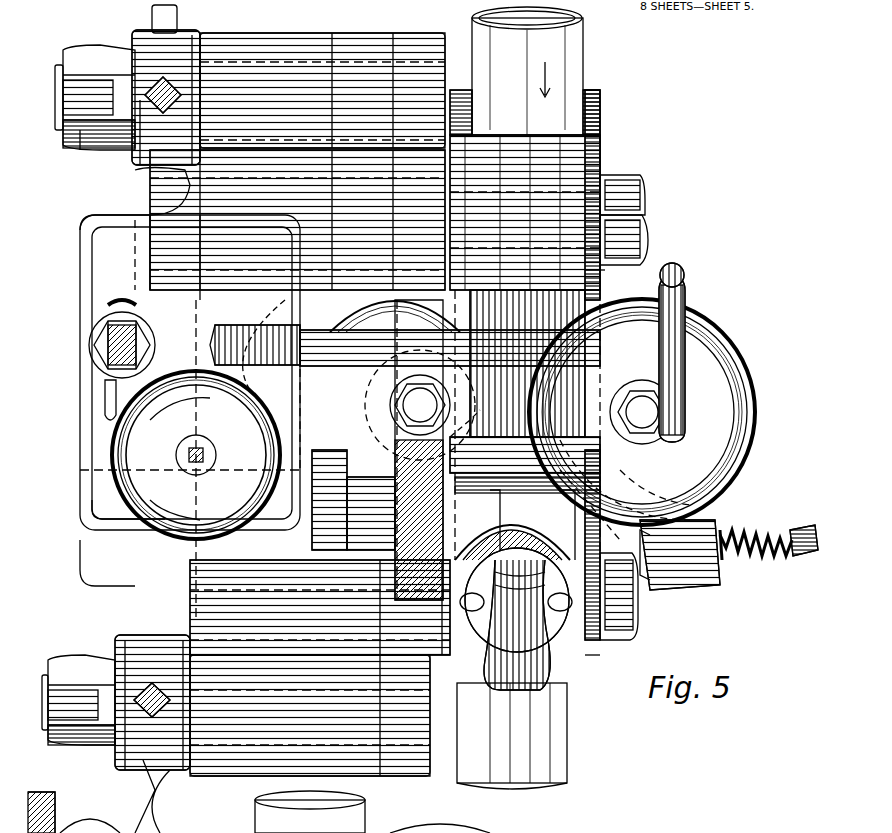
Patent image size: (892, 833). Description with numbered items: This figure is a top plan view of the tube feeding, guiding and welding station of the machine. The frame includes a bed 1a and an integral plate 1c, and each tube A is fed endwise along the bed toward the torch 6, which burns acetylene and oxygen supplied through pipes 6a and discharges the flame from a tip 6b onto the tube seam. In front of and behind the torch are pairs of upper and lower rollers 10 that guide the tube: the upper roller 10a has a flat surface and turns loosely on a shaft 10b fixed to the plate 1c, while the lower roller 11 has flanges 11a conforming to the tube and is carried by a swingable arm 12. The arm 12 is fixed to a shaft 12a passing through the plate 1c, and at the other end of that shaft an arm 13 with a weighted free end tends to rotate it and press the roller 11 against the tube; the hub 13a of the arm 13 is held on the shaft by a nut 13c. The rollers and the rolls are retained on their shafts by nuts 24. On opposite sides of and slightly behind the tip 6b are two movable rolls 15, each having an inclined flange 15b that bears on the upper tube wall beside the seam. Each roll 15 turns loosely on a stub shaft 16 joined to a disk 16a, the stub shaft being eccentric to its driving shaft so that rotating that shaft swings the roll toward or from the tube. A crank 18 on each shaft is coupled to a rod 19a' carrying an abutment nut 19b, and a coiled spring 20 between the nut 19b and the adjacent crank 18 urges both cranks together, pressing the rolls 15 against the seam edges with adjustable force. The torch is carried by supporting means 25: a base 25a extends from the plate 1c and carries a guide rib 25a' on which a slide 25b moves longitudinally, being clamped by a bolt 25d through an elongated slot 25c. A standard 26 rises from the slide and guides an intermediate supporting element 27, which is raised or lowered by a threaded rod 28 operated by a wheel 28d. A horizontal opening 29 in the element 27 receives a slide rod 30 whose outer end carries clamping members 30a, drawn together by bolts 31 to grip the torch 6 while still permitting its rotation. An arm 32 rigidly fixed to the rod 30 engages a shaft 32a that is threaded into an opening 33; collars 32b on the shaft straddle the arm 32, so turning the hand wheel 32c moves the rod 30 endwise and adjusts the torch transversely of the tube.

The bed 1a is at (333, 33).
The plate 1c is at (214, 778).
The torch 6 is at (555, 410).
The pipes 6a is at (600, 660).
The tip 6b is at (600, 275).
The pairs of upper and lower rollers 10 is at (543, 387).
The upper roller 10a is at (600, 135).
The shaft 10b is at (645, 212).
The lower roller 11 is at (600, 130).
The flanges 11a is at (600, 100).
The swingable arm 12 is at (426, 33).
The shaft 12a is at (63, 125).
The arm 13 is at (152, 16).
The hub 13a is at (133, 40).
The nut 13c is at (82, 150).
The movable rolls 15 is at (748, 365).
The inclined wall or flange 15b is at (742, 445).
The stub shaft 16 is at (730, 470).
The disk 16a is at (113, 812).
The crank or arm 18 is at (688, 580).
The rod 19a' is at (613, 592).
The nut 19b is at (800, 525).
The spring 20 is at (778, 560).
The nuts 24 is at (628, 190).
The torch supporting means 25 is at (190, 349).
The base 25a is at (99, 228).
The guide rib 25a' is at (123, 255).
The slide 25b is at (92, 515).
The elongated slot 25c is at (105, 405).
The bolt 25d is at (100, 345).
The standard 26 is at (80, 470).
The intermediate supporting element 27 is at (270, 480).
The shaft or rod 28 is at (210, 455).
The wheel 28d is at (95, 530).
The opening 29 is at (277, 385).
The slide rod 30 is at (385, 480).
The clamping members 30a is at (600, 530).
The bolts 31 is at (600, 545).
The arm 32 is at (450, 450).
The shaft 32a is at (688, 290).
The collars 32b is at (390, 395).
The hand wheel 32c is at (684, 265).
The opening 33 is at (270, 366).
The tube A is at (588, 70).